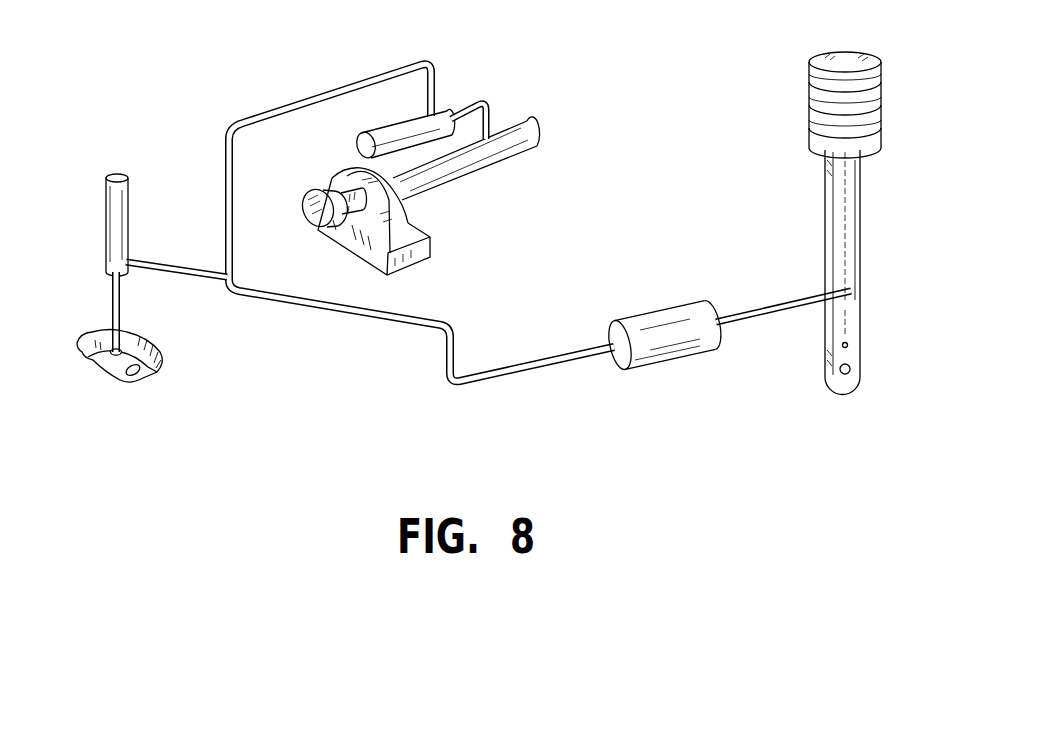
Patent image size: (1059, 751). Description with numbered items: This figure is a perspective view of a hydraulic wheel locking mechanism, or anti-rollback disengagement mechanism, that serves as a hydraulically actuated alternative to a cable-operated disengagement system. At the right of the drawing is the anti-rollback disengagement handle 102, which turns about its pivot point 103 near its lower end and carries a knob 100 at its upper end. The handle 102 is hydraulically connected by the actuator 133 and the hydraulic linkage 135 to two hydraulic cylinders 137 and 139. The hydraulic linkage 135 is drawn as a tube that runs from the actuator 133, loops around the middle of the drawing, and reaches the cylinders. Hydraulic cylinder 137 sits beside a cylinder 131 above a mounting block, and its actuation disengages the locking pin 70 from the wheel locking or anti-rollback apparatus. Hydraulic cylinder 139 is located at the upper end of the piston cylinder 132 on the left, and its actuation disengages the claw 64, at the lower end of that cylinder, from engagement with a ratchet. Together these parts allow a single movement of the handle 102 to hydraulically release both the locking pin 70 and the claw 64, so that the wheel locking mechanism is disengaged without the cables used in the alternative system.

The claw 64 is at (164, 362).
The locking pin 70 is at (529, 121).
The knob 100 is at (812, 59).
The anti-rollback disengagement handle 102 is at (840, 197).
The pivot point 103 is at (842, 372).
The cylinder 131 is at (373, 136).
The piston cylinder 132 is at (109, 213).
The actuator 133 is at (680, 307).
The hydraulic linkage 135 is at (452, 328).
The hydraulic cylinder 137 is at (443, 111).
The hydraulic cylinder 139 is at (119, 177).